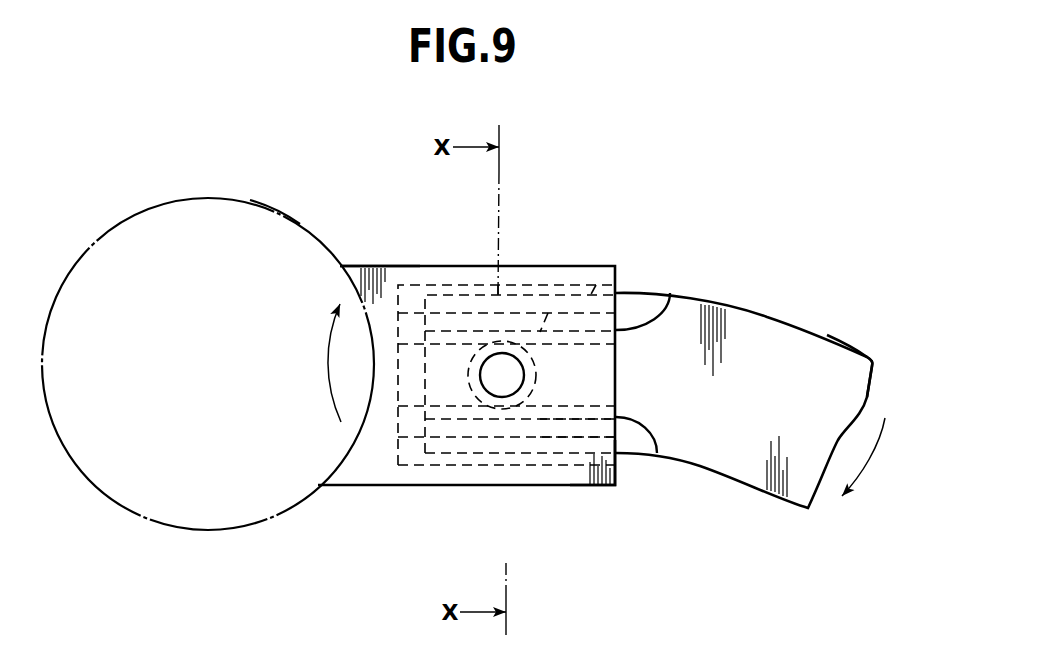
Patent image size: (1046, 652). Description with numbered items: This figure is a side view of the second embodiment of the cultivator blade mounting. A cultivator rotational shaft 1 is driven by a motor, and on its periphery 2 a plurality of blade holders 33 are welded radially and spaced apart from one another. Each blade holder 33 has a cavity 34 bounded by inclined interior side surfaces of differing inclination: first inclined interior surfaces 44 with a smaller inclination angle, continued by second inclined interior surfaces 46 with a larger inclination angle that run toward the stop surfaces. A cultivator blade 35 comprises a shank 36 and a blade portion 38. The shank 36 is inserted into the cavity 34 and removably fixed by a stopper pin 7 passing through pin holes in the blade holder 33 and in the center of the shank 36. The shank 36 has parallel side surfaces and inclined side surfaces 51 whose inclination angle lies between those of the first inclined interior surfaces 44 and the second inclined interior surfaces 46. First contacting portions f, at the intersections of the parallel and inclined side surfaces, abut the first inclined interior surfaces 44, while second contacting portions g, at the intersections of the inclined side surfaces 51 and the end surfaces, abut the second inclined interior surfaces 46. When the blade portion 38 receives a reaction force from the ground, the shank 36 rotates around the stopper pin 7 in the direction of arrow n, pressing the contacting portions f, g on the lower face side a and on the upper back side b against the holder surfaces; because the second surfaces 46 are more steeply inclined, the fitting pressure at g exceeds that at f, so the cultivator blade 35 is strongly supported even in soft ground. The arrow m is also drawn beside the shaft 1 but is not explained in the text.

The cultivator rotational shaft 1 is at (250, 200).
The periphery 2 is at (294, 219).
The stopper pin 7 is at (497, 387).
The blade holder 33 is at (539, 253).
The cavity 34 is at (398, 462).
The cultivator blade 35 is at (752, 302).
The shank 36 is at (499, 270).
The blade portion 38 is at (827, 336).
The first inclined interior surface 44 is at (552, 432).
The second inclined interior surface 46 is at (513, 450).
The inclined side surface 51 is at (638, 310).
The lower face side a is at (613, 495).
The upper back side b is at (408, 258).
The first contacting portion f is at (548, 313).
The second contacting portion g is at (596, 285).
The drum rotation direction m is at (331, 363).
The arrow n is at (863, 457).